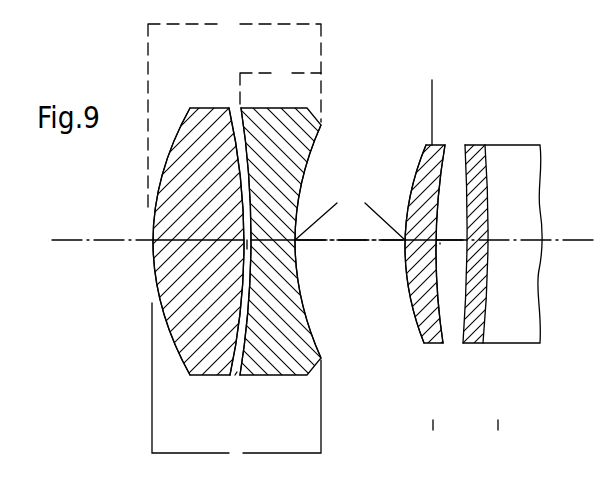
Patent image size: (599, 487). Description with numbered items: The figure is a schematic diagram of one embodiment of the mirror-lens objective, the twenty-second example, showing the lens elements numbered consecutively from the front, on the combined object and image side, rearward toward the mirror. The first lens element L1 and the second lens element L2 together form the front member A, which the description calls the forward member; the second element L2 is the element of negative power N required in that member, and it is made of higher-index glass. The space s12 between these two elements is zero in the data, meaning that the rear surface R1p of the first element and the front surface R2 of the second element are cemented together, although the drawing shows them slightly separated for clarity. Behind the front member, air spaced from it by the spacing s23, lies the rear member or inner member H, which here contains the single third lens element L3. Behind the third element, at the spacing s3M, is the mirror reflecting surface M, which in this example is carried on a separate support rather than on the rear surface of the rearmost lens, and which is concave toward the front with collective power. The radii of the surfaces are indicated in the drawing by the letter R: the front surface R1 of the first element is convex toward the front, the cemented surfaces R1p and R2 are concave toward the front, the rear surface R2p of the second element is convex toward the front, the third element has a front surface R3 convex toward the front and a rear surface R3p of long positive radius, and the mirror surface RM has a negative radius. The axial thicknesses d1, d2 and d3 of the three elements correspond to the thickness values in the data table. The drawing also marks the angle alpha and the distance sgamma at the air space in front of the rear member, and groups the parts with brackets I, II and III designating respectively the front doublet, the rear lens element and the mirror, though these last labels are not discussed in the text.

The front member A is at (234, 111).
The negative lens element N is at (280, 84).
The first lens group I is at (240, 461).
The second lens group II is at (444, 452).
The mirror group III is at (509, 452).
The first lens element L1 is at (202, 363).
The second lens element L2 is at (277, 357).
The third lens element L3 is at (433, 343).
The mirror reflecting surface M is at (498, 343).
The front surface radius of element one R1 is at (181, 130).
The rear surface radius of element one R1p is at (208, 72).
The front surface radius of element two R2 is at (241, 113).
The rear surface radius of element two R2p is at (350, 130).
The front surface radius of element three R3 is at (413, 173).
The rear surface radius of element three R3p is at (463, 94).
The mirror radius RM is at (466, 150).
The thickness of element one d1 is at (200, 243).
The thickness of element two d2 is at (273, 244).
The thickness of element three d3 is at (421, 250).
The spacing between elements one and two s12 is at (235, 375).
The spacing between elements two and three s23 is at (352, 243).
The distance s gamma sgamma is at (448, 240).
The spacing between element three and mirror s3M is at (441, 243).
The angle alpha is at (350, 211).
The rear member H is at (427, 99).